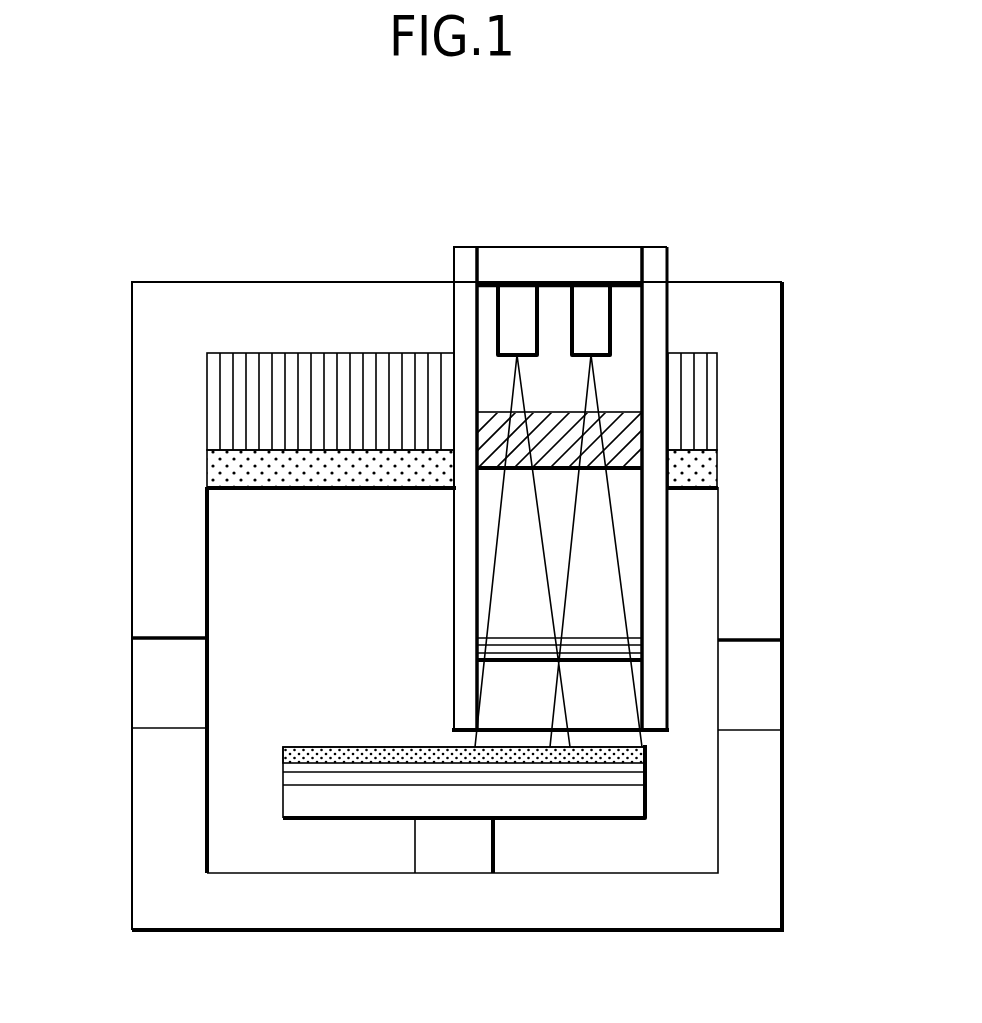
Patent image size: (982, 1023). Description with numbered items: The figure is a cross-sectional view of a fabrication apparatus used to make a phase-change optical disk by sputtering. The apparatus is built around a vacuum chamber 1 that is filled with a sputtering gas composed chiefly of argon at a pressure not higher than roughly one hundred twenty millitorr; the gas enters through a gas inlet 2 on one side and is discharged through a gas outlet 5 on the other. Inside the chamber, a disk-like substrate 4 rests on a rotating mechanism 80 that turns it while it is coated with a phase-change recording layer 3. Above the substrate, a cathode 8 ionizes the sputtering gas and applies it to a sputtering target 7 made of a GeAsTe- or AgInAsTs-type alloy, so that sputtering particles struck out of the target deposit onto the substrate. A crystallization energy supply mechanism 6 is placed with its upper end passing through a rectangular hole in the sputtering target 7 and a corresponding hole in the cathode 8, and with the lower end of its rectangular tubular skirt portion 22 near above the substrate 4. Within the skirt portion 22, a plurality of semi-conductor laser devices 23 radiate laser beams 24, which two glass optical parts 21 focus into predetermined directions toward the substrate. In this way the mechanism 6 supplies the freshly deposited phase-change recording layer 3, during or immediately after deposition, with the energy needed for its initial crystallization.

The vacuum chamber 1 is at (773, 353).
The gas inlet 2 is at (143, 683).
The phase-change recording layer 3 is at (650, 753).
The substrate 4 is at (647, 770).
The gas outlet 5 is at (773, 685).
The crystallization energy supply mechanism 6 is at (628, 308).
The sputtering target 7 is at (228, 465).
The cathode 8 is at (228, 382).
The optical parts 21 is at (603, 647).
The skirt portion 22 is at (463, 643).
The semi-conductor laser devices 23 is at (512, 290).
The laser beams 24 is at (590, 487).
The rotating mechanism 80 is at (580, 803).